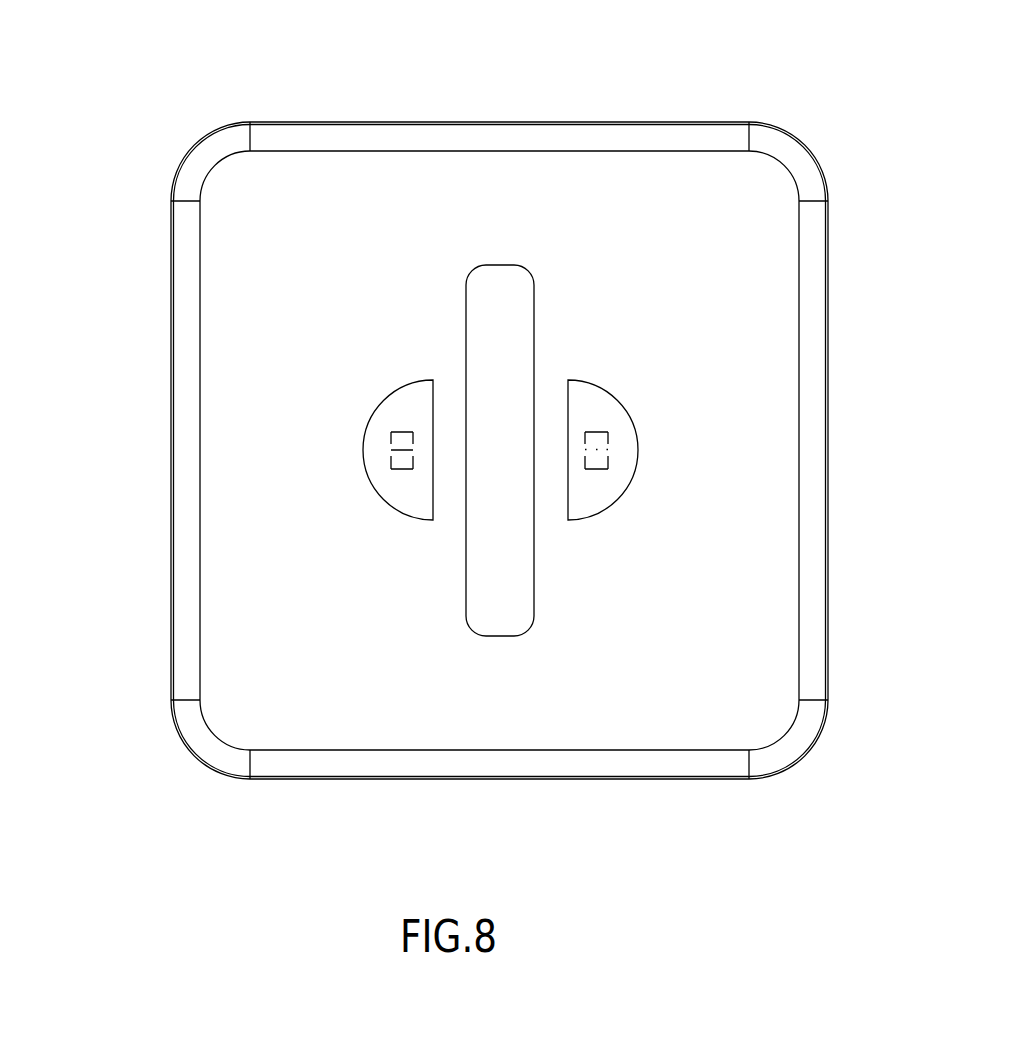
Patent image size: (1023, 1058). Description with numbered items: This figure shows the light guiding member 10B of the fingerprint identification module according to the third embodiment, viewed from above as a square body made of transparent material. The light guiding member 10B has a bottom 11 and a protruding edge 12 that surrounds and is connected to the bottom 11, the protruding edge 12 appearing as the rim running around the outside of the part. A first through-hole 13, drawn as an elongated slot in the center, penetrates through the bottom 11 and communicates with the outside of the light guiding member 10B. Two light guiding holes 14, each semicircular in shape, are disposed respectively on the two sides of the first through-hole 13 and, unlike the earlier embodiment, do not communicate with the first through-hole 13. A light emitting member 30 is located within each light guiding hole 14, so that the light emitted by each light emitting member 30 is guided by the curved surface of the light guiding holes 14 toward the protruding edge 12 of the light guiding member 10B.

The light guiding member 10B is at (536, 411).
The bottom 11 is at (720, 536).
The protruding edge 12 is at (813, 292).
The first through-hole 13 is at (503, 288).
The light guiding holes 14 is at (377, 475).
The light emitting members 30 is at (402, 445).